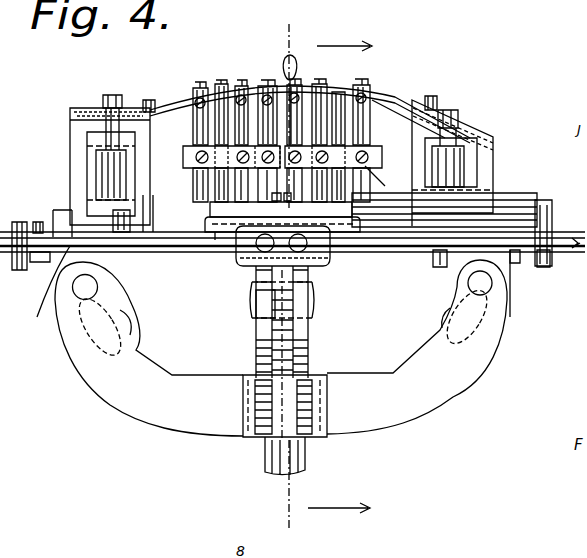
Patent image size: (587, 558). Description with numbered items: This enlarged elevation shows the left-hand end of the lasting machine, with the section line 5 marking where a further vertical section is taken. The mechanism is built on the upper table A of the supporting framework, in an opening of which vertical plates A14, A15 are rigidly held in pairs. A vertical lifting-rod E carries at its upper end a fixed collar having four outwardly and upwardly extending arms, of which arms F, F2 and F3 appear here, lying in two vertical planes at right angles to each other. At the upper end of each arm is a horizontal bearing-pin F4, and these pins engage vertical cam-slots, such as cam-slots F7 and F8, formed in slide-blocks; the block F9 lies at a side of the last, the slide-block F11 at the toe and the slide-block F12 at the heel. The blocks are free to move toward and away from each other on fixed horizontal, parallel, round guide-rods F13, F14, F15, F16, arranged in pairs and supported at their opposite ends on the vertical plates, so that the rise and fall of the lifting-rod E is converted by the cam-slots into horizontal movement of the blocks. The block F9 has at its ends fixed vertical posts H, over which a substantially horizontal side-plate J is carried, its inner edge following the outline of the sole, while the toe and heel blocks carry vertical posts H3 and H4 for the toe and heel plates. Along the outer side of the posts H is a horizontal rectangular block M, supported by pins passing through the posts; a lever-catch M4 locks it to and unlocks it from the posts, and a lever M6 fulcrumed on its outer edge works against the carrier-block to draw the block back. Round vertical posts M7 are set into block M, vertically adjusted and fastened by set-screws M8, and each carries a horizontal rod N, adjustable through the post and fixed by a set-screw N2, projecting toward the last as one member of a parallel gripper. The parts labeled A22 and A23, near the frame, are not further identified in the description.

The section line 5 is at (286, 275).
The upper table A is at (216, 240).
The vertical plate A14 is at (18, 222).
The vertical plate A15 is at (433, 258).
The clip A22 is at (147, 100).
The side frame A23 is at (76, 123).
The lifting-rod E is at (306, 456).
The arm F is at (310, 337).
The arm F2 is at (178, 375).
The arm F3 is at (413, 367).
The bearing-pin F4 is at (88, 289).
The cam-slot F7 is at (125, 323).
The cam-slot F8 is at (447, 318).
The slide-block F9 is at (362, 204).
The slide-block F11 is at (65, 228).
The slide-block F12 is at (493, 223).
The guide-rod F13 is at (300, 218).
The guide-rod F14 is at (318, 293).
The guide-rod F15 is at (47, 264).
The guide-rod F16 is at (518, 266).
The vertical post H is at (222, 84).
The vertical post H3 is at (446, 110).
The vertical post H4 is at (113, 95).
The side-plate J is at (190, 104).
The rectangular block M is at (182, 158).
The lever-catch M4 is at (281, 202).
The lever M6 is at (286, 66).
The vertical post M7 is at (380, 106).
The set-screw M8 is at (386, 177).
The horizontal rod N is at (246, 90).
The set-screw N2 is at (199, 82).